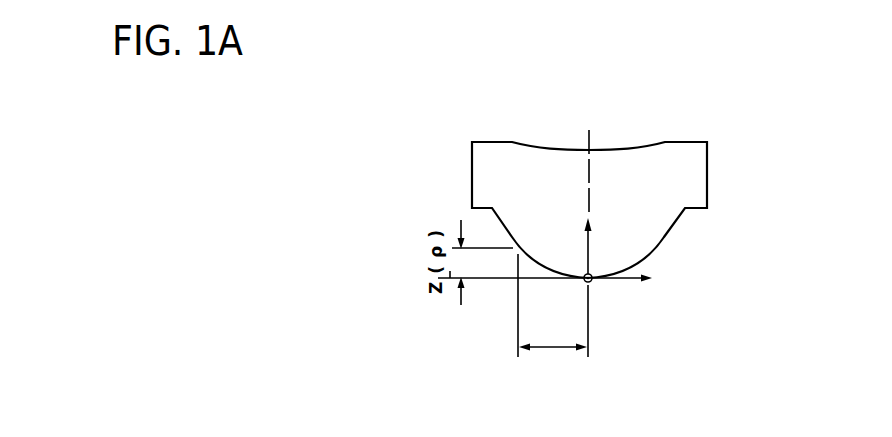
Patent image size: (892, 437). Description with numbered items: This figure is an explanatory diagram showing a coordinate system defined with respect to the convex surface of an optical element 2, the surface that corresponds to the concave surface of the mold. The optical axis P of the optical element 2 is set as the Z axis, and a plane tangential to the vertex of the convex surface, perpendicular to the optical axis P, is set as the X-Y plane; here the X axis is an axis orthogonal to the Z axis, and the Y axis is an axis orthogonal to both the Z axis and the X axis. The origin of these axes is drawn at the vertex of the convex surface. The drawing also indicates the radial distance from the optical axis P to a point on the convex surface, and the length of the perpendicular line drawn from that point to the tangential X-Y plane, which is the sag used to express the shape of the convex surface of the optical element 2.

The optical element 2 is at (707, 175).
The optical axis P is at (588, 156).
The X axis X is at (597, 291).
The Y axis Y is at (631, 278).
The Z axis Z is at (598, 235).